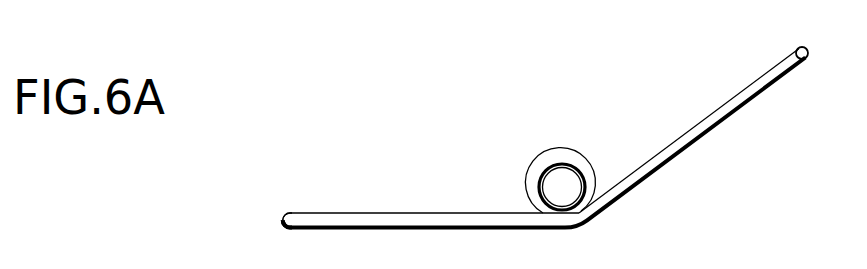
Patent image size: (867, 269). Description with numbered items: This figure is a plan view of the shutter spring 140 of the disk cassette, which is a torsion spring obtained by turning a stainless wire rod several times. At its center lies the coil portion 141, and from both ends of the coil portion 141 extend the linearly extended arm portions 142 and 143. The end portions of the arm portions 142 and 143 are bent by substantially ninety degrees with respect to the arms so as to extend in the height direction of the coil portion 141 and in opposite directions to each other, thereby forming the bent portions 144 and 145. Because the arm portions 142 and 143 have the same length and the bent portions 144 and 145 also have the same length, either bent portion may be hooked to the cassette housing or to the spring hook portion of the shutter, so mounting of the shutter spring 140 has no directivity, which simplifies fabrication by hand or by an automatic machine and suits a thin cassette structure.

The shutter spring 140 is at (560, 143).
The coil portion 141 is at (540, 170).
The arm portion 142 is at (427, 219).
The arm portion 143 is at (707, 122).
The bent portion 144 is at (283, 214).
The bent portion 145 is at (797, 49).